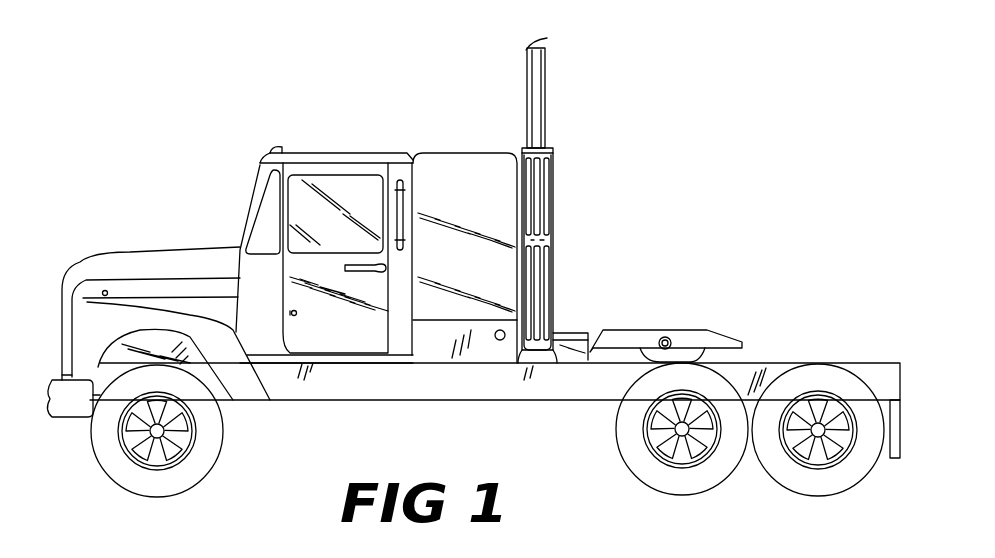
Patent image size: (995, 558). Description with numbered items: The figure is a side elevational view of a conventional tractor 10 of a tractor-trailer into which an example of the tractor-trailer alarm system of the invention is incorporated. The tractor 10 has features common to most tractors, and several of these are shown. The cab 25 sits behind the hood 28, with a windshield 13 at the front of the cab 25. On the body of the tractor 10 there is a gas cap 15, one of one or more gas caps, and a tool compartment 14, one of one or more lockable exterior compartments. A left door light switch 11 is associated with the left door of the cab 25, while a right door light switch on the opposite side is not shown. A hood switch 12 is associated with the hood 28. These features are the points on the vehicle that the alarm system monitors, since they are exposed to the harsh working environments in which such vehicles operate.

The tractor 10 is at (473, 267).
The left door light switch 11 is at (294, 318).
The hood switch 12 is at (105, 290).
The windshield 13 is at (304, 264).
The tool compartment 14 is at (577, 350).
The gas cap 15 is at (497, 343).
The cab 25 is at (340, 190).
The hood 28 is at (166, 295).